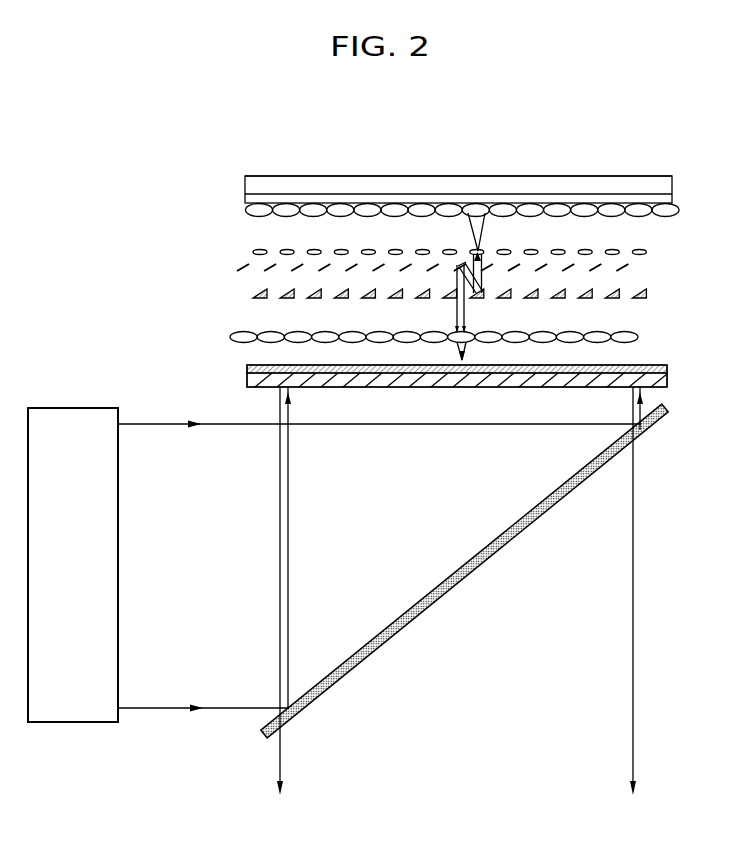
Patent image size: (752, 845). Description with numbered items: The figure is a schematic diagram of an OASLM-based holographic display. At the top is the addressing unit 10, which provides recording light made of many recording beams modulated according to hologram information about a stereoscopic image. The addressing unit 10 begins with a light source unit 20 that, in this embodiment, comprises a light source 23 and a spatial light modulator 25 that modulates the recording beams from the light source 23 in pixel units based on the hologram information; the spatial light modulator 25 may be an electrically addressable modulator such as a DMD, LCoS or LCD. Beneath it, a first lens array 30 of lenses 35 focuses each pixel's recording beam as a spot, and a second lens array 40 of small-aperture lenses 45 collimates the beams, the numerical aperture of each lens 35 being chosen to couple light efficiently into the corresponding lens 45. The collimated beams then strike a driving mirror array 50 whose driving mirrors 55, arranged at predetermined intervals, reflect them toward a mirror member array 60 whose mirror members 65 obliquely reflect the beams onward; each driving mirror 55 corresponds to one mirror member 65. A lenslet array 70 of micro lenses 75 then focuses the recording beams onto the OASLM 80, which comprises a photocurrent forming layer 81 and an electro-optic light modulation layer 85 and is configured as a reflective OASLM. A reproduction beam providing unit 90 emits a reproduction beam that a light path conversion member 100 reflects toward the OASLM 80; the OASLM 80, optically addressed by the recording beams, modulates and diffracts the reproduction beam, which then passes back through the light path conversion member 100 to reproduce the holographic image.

The addressing unit 10 is at (156, 185).
The light source unit 20 is at (229, 193).
The light source 23 is at (263, 182).
The spatial light modulator 25 is at (300, 199).
The first lens array 30 is at (229, 212).
The lens 35 is at (477, 205).
The second lens array 40 is at (229, 252).
The lens 45 is at (504, 249).
The driving mirror array 50 is at (219, 268).
The driving mirror 55 is at (627, 267).
The mirror member array 60 is at (229, 292).
The mirror member 65 is at (646, 294).
The lenslet array 70 is at (219, 337).
The micro lens 75 is at (471, 333).
The OASLM 80 is at (229, 374).
The photocurrent forming layer 81 is at (669, 367).
The electro-optic light modulation layer 85 is at (668, 386).
The reproduction beam providing unit 90 is at (75, 408).
The light path conversion member 100 is at (668, 414).